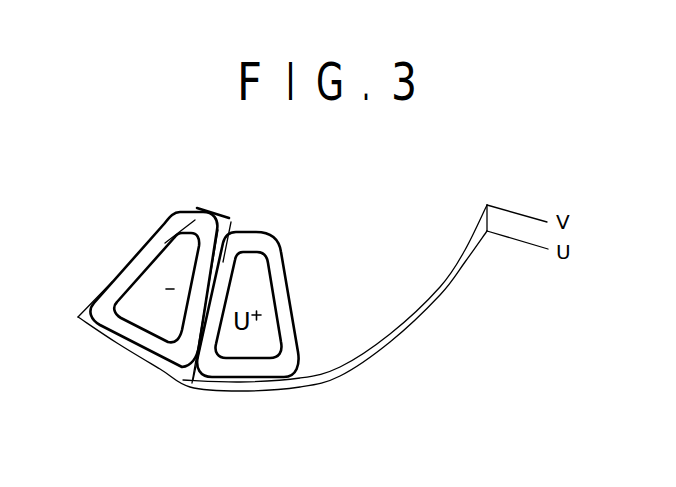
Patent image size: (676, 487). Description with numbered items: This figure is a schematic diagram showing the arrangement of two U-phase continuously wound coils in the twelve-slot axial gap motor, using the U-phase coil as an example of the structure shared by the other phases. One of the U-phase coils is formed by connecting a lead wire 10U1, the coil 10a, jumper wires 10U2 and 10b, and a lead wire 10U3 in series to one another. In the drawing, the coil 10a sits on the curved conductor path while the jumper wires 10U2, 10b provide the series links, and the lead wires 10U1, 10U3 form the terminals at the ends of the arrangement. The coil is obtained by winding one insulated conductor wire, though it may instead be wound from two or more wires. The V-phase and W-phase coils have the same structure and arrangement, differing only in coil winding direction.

The coil 10a is at (244, 379).
The jumper wire 10b is at (127, 351).
The lead wire 10U1 is at (518, 212).
The jumper wire 10U2 is at (216, 212).
The lead wire 10U3 is at (509, 238).